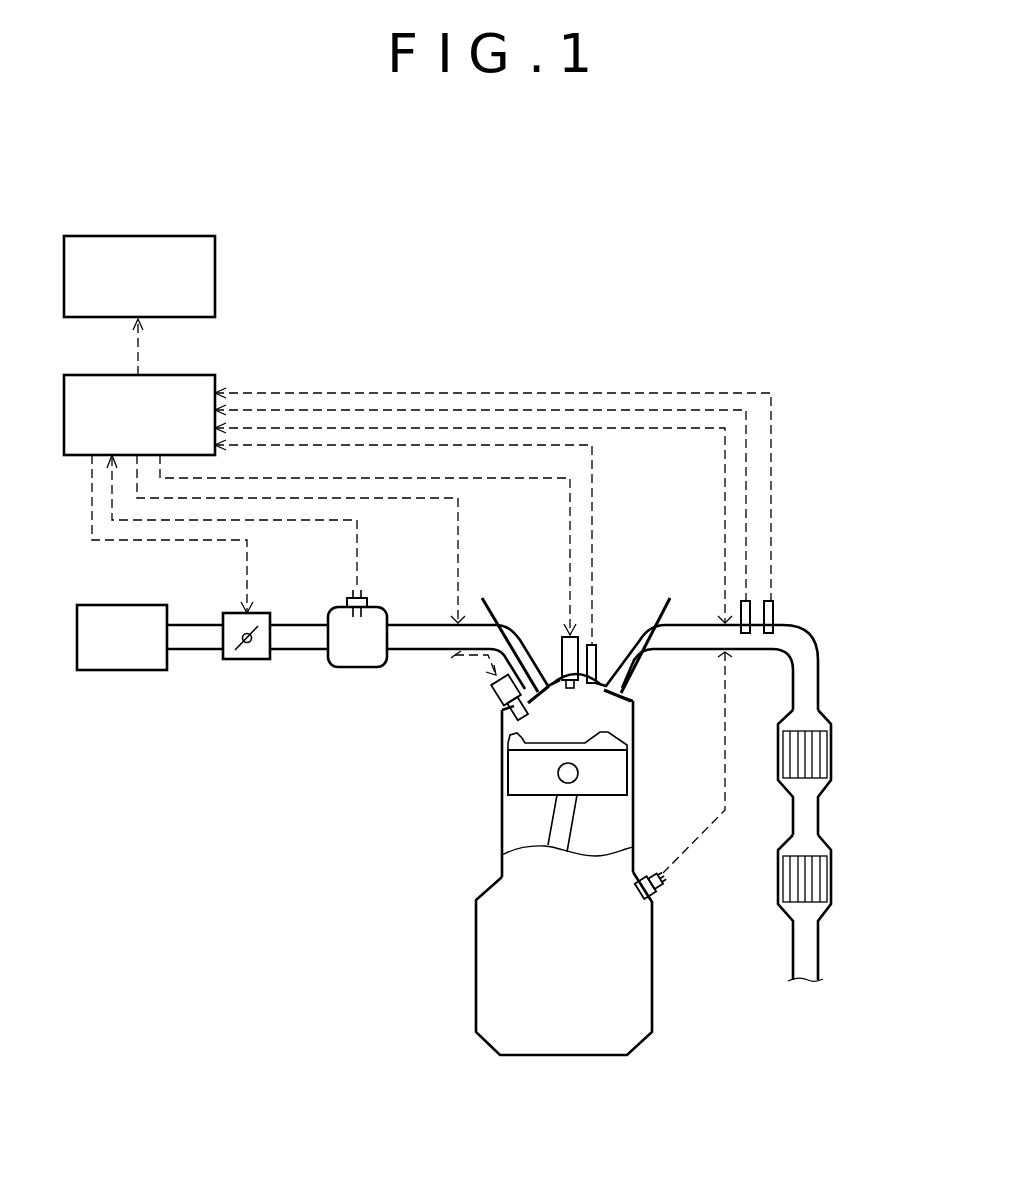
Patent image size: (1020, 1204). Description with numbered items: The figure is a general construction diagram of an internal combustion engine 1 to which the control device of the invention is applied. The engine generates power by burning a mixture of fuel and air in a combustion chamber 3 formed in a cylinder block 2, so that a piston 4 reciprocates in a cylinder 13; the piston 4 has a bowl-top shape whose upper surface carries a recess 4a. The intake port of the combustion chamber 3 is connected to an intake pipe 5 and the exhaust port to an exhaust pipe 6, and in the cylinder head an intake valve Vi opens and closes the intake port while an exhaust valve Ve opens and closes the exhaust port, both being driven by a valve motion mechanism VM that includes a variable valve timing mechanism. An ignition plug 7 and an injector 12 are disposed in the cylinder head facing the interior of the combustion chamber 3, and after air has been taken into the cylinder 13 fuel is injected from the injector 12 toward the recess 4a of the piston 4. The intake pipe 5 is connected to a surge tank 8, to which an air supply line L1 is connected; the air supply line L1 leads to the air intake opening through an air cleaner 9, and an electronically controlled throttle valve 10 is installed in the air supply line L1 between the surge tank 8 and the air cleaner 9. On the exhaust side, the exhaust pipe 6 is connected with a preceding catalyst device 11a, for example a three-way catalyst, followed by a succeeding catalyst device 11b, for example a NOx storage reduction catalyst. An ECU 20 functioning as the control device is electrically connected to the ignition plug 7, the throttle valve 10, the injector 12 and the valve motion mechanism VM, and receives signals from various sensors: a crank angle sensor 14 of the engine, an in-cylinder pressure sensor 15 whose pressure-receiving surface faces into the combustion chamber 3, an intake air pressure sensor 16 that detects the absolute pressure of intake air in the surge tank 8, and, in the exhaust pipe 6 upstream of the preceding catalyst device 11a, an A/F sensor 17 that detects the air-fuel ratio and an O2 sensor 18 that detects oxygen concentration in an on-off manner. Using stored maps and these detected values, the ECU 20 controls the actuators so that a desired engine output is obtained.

The internal combustion engine 1 is at (357, 790).
The cylinder block 2 is at (485, 955).
The combustion chamber 3 is at (574, 737).
The piston 4 is at (525, 777).
The recess 4a is at (511, 736).
The intake pipe 5 is at (532, 655).
The exhaust pipe 6 is at (647, 668).
The ignition plug 7 is at (553, 637).
The surge tank 8 is at (357, 667).
The air cleaner 9 is at (118, 670).
The throttle valve 10 is at (245, 659).
The preceding catalyst device 11a is at (822, 756).
The succeeding catalyst device 11b is at (822, 888).
The injector 12 is at (490, 690).
The cylinder 13 is at (600, 823).
The crank angle sensor 14 is at (663, 888).
The in-cylinder pressure sensor 15 is at (597, 645).
The intake air pressure sensor 16 is at (367, 600).
The A/F sensor 17 is at (742, 617).
The O2 sensor 18 is at (767, 623).
The ECU 20 is at (167, 375).
The valve motion mechanism VM is at (150, 236).
The intake valve Vi is at (488, 600).
The exhaust valve Ve is at (670, 600).
The air supply line L1 is at (300, 649).